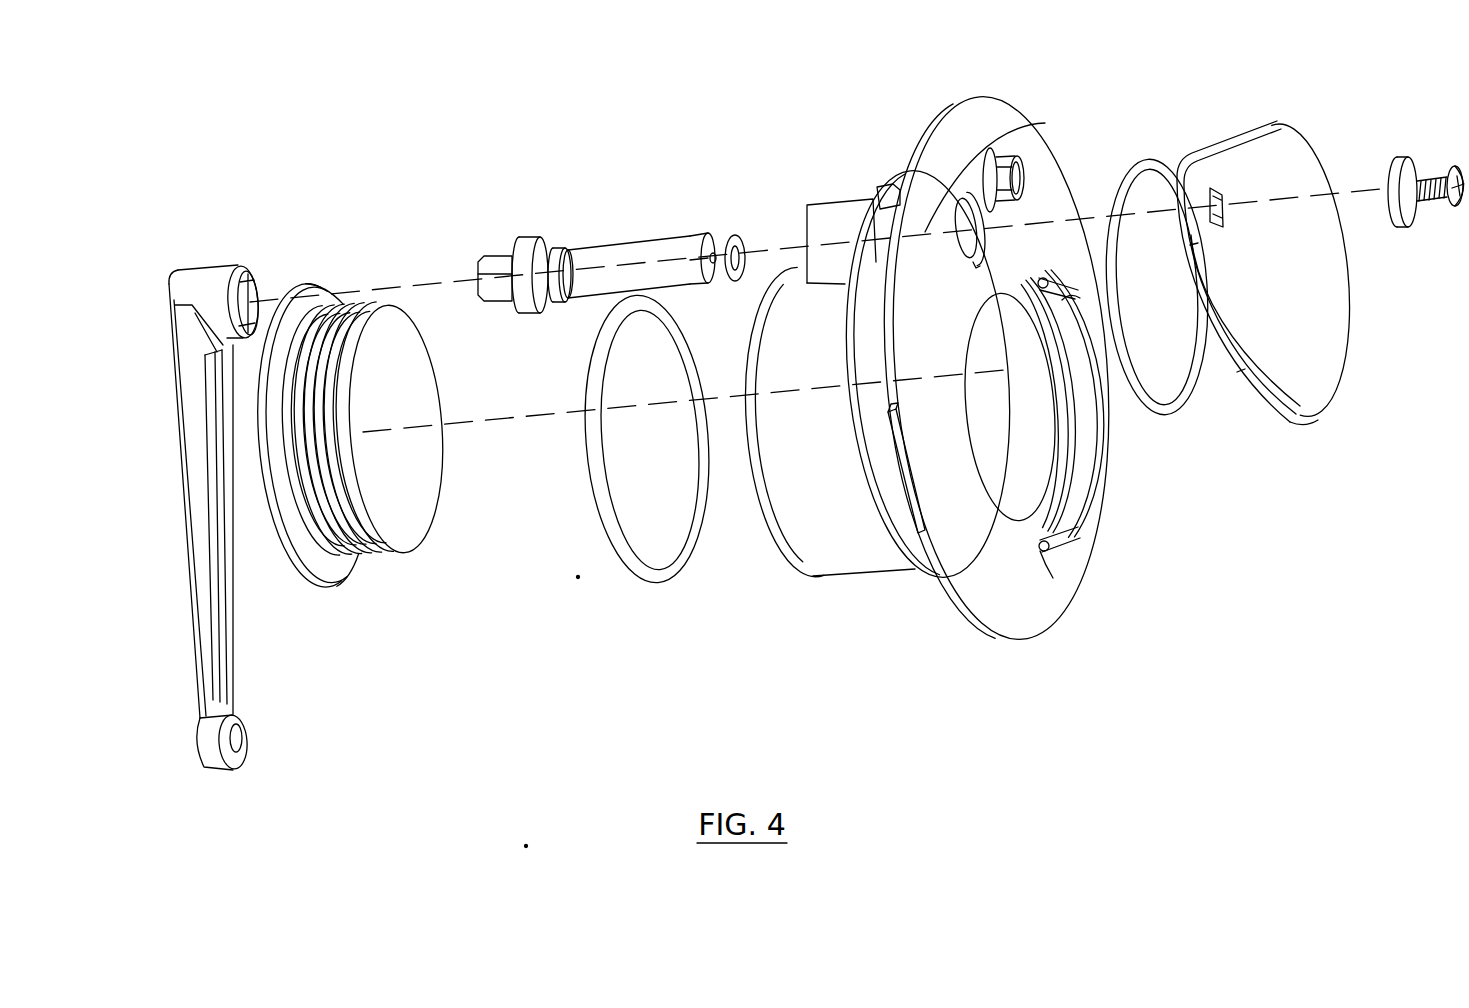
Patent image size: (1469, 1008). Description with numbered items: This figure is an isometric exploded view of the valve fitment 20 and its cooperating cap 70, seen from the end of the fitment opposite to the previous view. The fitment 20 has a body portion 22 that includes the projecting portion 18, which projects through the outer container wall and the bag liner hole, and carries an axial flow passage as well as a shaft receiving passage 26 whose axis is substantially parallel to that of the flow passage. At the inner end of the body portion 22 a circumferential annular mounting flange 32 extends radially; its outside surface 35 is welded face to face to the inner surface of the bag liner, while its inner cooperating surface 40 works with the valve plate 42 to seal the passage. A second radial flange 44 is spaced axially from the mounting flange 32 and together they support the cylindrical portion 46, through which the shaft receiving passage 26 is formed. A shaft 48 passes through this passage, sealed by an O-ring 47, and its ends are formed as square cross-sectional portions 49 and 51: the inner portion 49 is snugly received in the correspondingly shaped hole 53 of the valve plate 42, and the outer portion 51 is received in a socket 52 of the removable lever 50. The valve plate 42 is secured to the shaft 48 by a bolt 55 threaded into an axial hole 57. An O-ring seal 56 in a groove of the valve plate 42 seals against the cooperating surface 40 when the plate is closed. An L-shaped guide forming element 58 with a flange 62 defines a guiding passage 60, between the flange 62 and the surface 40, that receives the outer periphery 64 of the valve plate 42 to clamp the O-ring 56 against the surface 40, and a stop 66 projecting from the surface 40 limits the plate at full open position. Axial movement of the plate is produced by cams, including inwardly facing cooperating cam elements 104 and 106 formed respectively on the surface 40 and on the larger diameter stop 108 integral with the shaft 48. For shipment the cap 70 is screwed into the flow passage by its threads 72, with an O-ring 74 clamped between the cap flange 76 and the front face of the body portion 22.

The projecting portion 18 is at (881, 363).
The fitment 20 is at (1024, 368).
The body portion 22 is at (913, 588).
The shaft receiving passage 26 is at (906, 172).
The mounting flange 32 is at (1024, 394).
The outside surface 35 is at (970, 617).
The cooperating surface 40 is at (1053, 210).
The valve plate 42 is at (1313, 244).
The second radial flange 44 is at (919, 424).
The cylindrical portion 46 is at (842, 203).
The O-ring 47 is at (752, 243).
The shaft 48 is at (629, 258).
The square cross-sectional portion 49 is at (720, 249).
The lever 50 is at (246, 473).
The square cross-sectional portion 51 is at (495, 250).
The socket 52 is at (245, 300).
The hole 53 is at (1225, 197).
The bolt 55 is at (1422, 177).
The O-ring seal 56 is at (1195, 395).
The axial hole 57 is at (713, 263).
The L-shaped guide forming element 58 is at (1097, 522).
The guiding passage 60 is at (1058, 553).
The flange 62 is at (1090, 458).
The outer periphery 64 is at (1330, 400).
The stop 66 is at (1045, 123).
The cap 70 is at (360, 439).
The threads 72 is at (380, 558).
The O-ring 74 is at (655, 584).
The flange 76 is at (333, 587).
The cooperating cam element 104 is at (1000, 264).
The cooperating cam element 106 is at (552, 300).
The stop 108 is at (518, 312).